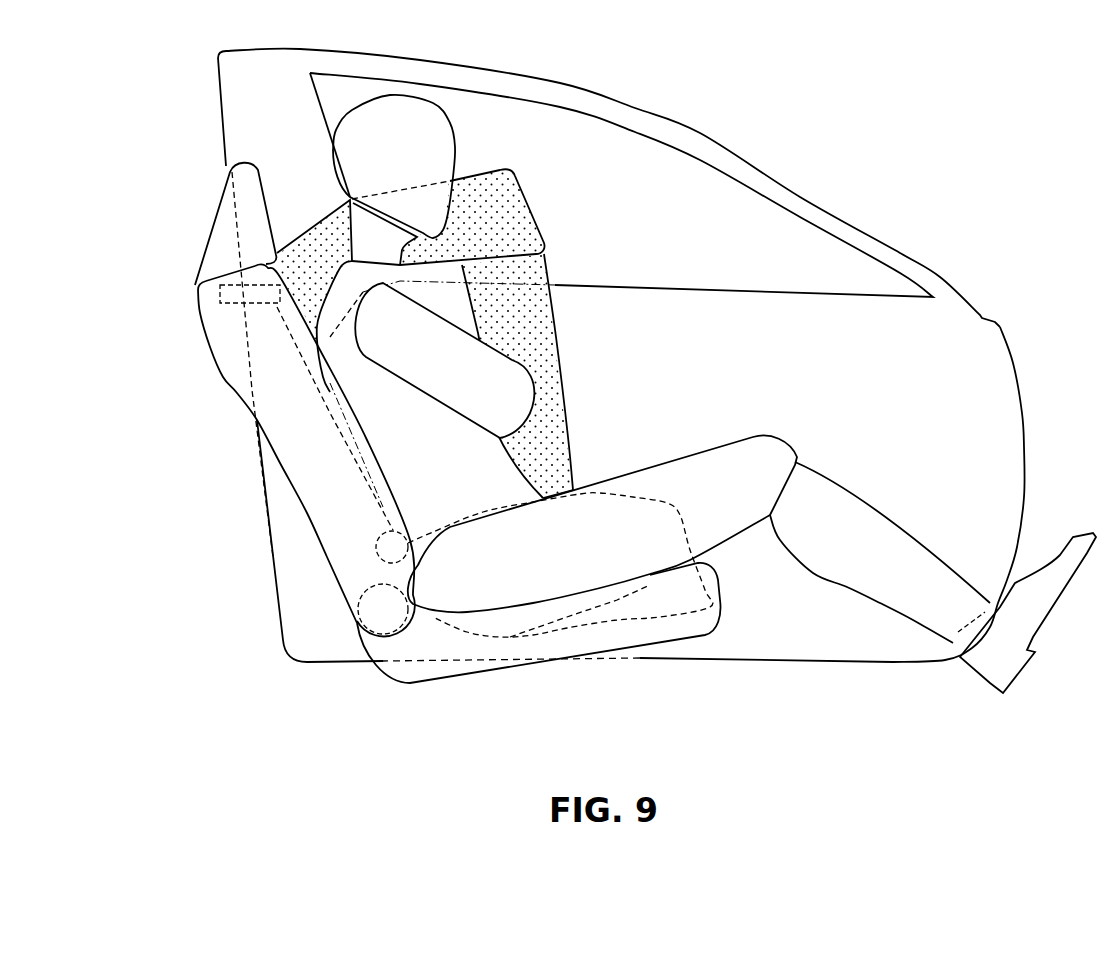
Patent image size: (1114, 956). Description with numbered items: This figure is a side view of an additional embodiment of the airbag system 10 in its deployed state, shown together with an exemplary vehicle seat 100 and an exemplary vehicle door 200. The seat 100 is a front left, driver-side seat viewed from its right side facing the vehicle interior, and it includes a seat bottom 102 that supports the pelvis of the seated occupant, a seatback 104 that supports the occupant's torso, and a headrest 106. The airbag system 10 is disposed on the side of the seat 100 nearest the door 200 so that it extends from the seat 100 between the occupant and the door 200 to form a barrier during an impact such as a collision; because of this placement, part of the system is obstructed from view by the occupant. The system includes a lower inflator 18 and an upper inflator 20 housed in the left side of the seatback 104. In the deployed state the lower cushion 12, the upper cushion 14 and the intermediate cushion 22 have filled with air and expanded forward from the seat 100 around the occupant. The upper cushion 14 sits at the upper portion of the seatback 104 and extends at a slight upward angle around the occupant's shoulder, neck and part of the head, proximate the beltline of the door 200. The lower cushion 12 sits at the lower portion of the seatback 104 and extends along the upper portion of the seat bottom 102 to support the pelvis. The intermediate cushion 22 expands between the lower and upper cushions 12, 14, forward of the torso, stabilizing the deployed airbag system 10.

The airbag system 10 is at (686, 394).
The lower cushion 12 is at (712, 611).
The upper cushion 14 is at (497, 170).
The lower inflator 18 is at (395, 542).
The upper inflator 20 is at (222, 297).
The intermediate cushion 22 is at (547, 350).
The seat 100 is at (253, 498).
The seat bottom 102 is at (412, 673).
The seatback 104 is at (285, 437).
The headrest 106 is at (245, 175).
The vehicle door 200 is at (894, 220).